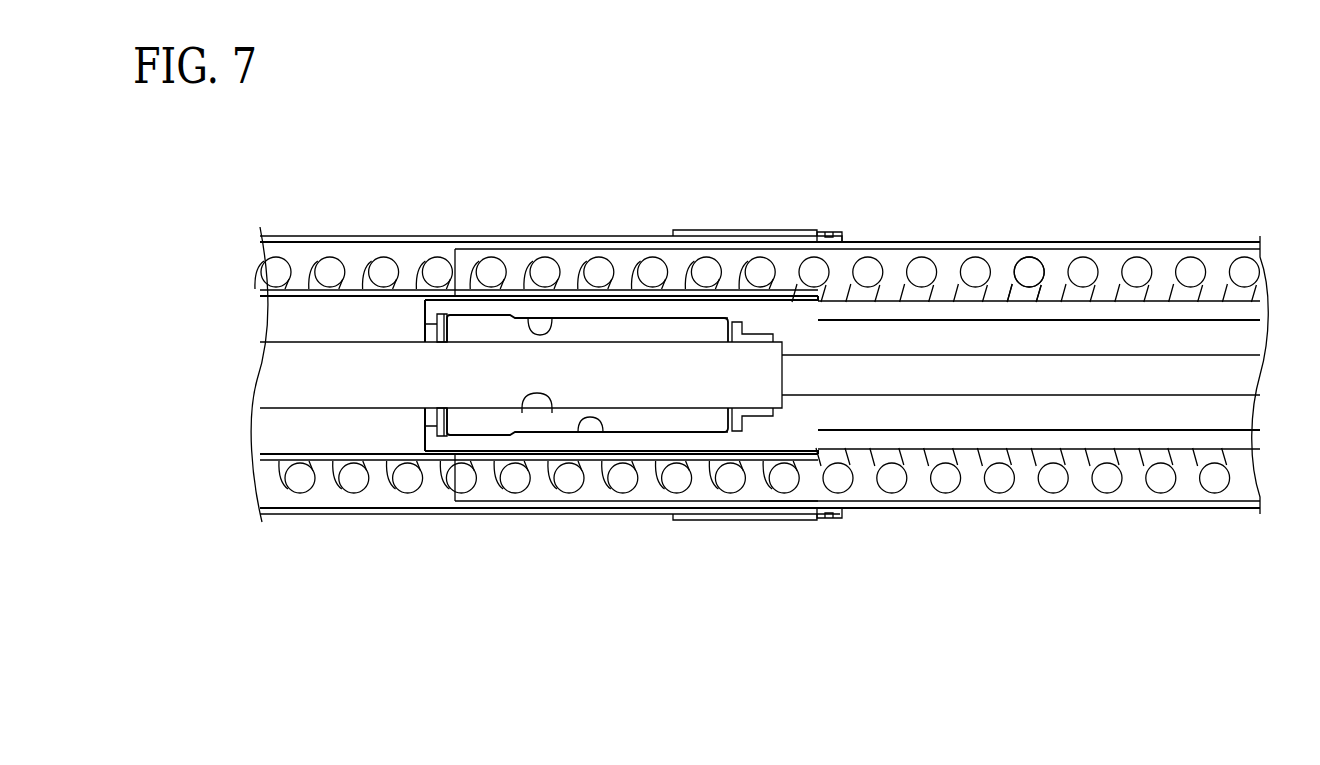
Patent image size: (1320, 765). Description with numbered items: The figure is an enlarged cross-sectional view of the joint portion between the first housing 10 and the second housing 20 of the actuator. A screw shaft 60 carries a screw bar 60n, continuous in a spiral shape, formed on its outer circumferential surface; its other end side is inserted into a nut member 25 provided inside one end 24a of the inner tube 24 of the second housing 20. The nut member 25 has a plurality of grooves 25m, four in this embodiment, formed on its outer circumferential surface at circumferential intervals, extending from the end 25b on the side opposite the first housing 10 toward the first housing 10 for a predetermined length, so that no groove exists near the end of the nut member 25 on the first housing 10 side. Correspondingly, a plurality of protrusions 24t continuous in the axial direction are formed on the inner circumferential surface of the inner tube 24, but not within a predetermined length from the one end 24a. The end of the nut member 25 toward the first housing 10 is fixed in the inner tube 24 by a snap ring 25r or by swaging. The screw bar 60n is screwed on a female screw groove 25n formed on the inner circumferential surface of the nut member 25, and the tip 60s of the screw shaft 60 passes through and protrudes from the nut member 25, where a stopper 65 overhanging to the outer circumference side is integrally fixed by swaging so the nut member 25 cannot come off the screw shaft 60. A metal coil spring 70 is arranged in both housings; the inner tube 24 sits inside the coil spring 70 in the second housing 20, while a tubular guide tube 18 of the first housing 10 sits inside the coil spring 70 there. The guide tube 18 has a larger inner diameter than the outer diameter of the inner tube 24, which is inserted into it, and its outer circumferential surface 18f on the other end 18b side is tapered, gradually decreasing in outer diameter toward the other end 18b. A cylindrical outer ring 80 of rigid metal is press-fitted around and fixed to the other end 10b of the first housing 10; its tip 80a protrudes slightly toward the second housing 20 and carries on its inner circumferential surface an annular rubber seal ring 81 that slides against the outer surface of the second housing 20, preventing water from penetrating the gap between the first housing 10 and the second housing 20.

The first housing 10 is at (303, 229).
The other end of the first housing 10b is at (800, 230).
The guide tube 18 is at (355, 292).
The other end of the guide tube 18b is at (712, 502).
The outer circumferential surface of the guide tube 18f is at (790, 502).
The second housing 20 is at (1115, 240).
The inner tube 24 is at (1053, 470).
The one end of the inner tube 24a is at (497, 436).
The protrusion 24t is at (550, 318).
The nut member 25 is at (600, 318).
The end of the nut member 25b is at (712, 320).
The groove 25m is at (652, 318).
The female screw groove 25n is at (552, 413).
The snap ring 25r is at (441, 437).
The screw shaft 60 is at (408, 357).
The screw bar 60n is at (397, 411).
The tip of the screw shaft 60s is at (768, 377).
The stopper 65 is at (758, 324).
The coil spring 70 is at (1033, 265).
The outer ring 80 is at (813, 231).
The tip of the outer ring 80a is at (840, 233).
The seal ring 81 is at (845, 238).